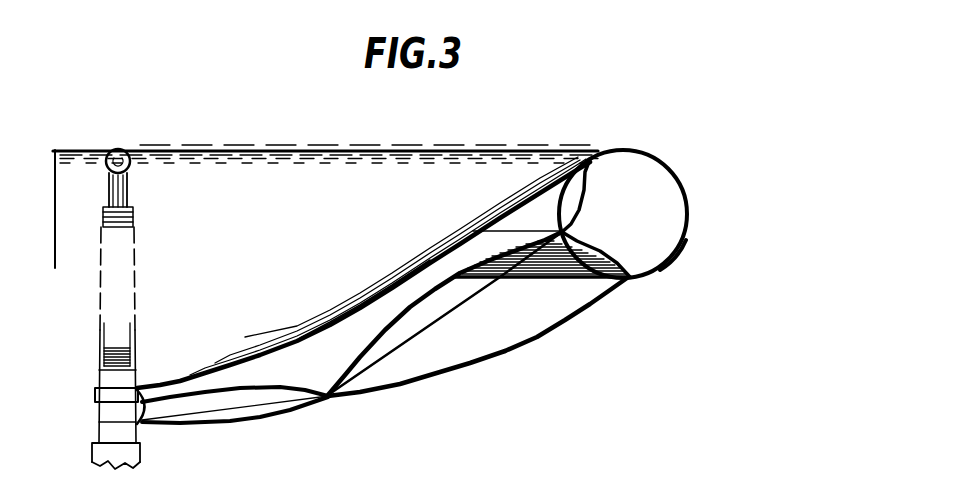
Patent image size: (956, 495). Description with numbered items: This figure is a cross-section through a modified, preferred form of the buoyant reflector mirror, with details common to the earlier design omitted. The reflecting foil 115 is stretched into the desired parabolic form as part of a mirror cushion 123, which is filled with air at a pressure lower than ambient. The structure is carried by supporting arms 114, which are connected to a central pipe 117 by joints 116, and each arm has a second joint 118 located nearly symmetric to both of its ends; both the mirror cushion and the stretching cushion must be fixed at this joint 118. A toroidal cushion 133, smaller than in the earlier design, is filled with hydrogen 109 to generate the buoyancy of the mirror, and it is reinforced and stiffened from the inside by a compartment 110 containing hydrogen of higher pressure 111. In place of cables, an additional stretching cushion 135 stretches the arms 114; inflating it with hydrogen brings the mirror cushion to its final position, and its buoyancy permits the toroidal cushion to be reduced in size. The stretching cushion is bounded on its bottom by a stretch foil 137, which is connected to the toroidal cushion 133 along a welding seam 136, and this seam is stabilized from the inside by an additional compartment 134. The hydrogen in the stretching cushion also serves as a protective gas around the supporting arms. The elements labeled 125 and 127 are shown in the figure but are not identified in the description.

The hydrogen 109 is at (660, 244).
The compartment 110 is at (603, 165).
The hydrogen of higher pressure 111 is at (522, 320).
The supporting arms 114 is at (229, 413).
The reflecting foil 115 is at (392, 292).
The joints 116 is at (140, 425).
The central pipe 117 is at (102, 432).
The second joint 118 is at (331, 402).
The mirror cushion 123 is at (334, 326).
The leading edge spar 125 is at (300, 362).
The mast pivot 127 is at (129, 169).
The toroidal cushion 133 is at (664, 158).
The additional compartment 134 is at (618, 248).
The stretching cushion 135 is at (528, 391).
The welding seam 136 is at (628, 280).
The stretch foil 137 is at (568, 313).